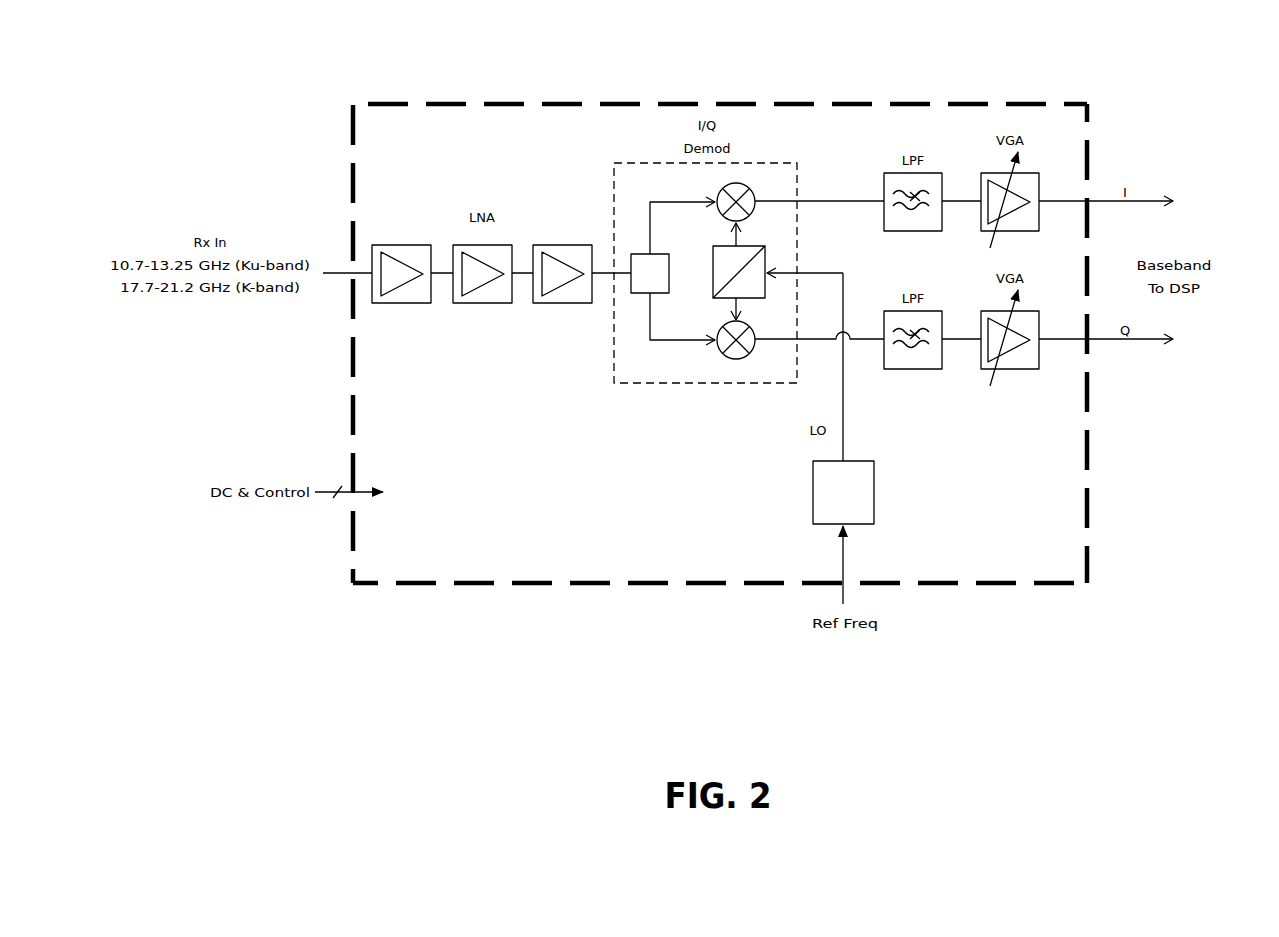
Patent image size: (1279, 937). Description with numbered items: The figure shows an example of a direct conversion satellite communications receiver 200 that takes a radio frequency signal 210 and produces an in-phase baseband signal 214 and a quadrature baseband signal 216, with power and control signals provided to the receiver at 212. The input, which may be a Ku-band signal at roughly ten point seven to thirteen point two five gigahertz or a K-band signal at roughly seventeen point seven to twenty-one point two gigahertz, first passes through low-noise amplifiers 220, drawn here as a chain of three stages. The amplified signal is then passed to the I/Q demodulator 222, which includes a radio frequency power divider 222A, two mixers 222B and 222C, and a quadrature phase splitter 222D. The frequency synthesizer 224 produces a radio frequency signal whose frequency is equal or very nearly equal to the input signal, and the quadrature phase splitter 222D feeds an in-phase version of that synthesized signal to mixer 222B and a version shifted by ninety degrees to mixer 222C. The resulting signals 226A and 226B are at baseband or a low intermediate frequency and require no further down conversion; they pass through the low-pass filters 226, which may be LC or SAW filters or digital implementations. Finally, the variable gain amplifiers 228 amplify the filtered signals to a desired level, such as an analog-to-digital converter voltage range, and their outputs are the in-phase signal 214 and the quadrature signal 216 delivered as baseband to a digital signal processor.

The direct conversion satellite communications receiver 200 is at (682, 98).
The radio frequency signal 210 is at (339, 275).
The power and control signals 212 is at (318, 496).
The in-phase baseband signal 214 is at (1146, 201).
The quadrature baseband signal 216 is at (1147, 342).
The low-noise amplifiers 220 is at (492, 318).
The I/Q demodulator 222 is at (642, 383).
The radio frequency power divider 222A is at (626, 253).
The mixer 222B is at (741, 186).
The mixer 222C is at (730, 359).
The quadrature phase splitter 222D is at (767, 247).
The frequency synthesizer 224 is at (878, 478).
The low-pass filters 226 is at (901, 235).
The signal 226A is at (817, 200).
The signal 226B is at (865, 343).
The variable gain amplifiers 228 is at (1040, 170).